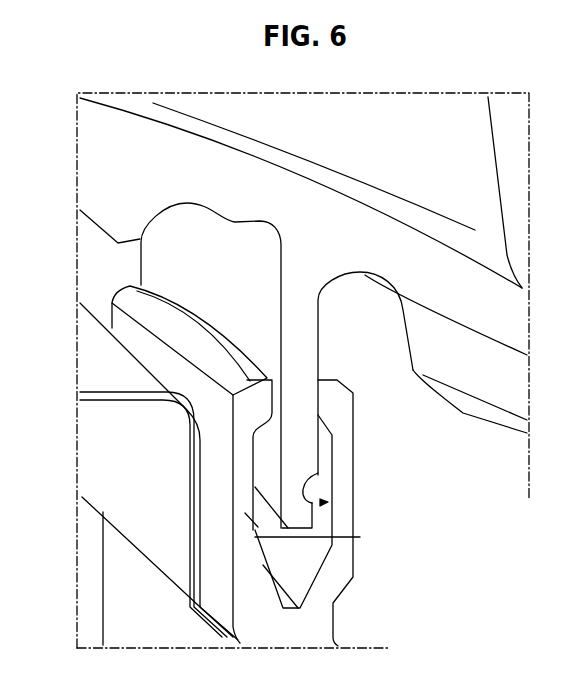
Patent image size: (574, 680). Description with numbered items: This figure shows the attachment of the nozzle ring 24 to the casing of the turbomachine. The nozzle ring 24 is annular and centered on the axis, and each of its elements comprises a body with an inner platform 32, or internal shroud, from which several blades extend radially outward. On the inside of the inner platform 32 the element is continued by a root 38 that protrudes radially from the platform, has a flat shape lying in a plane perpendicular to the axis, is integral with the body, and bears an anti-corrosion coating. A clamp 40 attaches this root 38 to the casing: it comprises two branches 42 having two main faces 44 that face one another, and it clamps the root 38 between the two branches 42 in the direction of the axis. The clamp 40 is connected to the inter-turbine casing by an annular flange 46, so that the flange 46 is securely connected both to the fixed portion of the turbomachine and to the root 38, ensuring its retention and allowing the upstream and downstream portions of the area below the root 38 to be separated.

The nozzle ring 24 is at (344, 138).
The inner platform 32 is at (407, 265).
The root 38 is at (290, 370).
The clamp 40 is at (345, 485).
The branches 42 is at (342, 512).
The main faces 44 is at (256, 465).
The annular flange 46 is at (193, 512).